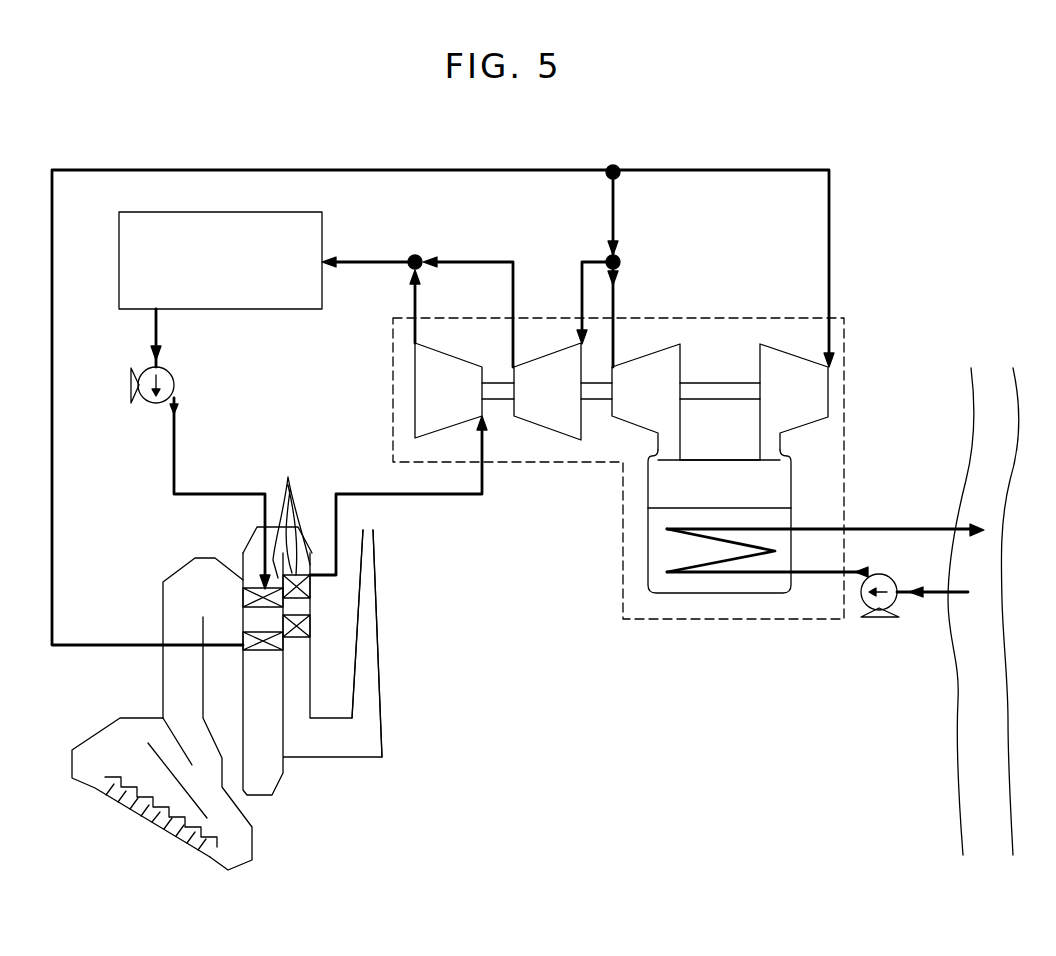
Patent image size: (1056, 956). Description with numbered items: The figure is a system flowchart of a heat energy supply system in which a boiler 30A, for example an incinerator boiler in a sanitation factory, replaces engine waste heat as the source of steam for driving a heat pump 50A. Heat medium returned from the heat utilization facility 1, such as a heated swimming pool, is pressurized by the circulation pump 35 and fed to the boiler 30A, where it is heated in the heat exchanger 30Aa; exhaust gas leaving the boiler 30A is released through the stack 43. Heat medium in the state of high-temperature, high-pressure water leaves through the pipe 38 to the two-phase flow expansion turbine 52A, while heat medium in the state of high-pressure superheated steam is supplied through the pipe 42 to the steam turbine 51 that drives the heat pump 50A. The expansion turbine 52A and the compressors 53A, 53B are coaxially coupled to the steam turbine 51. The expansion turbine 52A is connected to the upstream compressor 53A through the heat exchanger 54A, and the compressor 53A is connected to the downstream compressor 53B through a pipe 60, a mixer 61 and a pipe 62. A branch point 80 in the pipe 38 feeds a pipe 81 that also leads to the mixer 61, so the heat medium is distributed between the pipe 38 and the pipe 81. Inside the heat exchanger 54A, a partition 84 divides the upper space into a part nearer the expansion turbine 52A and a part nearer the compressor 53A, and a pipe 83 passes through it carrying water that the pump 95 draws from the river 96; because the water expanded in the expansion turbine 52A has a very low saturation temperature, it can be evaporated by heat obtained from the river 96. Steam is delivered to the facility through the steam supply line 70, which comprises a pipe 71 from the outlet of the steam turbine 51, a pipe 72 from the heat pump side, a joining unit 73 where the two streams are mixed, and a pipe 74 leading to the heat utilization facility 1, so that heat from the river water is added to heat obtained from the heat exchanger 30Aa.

The heat utilization facility 1 is at (226, 273).
The boiler 30A is at (268, 656).
The heat exchanger 30Aa is at (288, 478).
The circulation pump 35 is at (150, 407).
The pipe 38 is at (182, 170).
The pipe 42 is at (450, 500).
The stack 43 is at (378, 601).
The heat pump 50A is at (688, 433).
The steam turbine 51 is at (430, 403).
The two-phase flow expansion turbine 52A is at (816, 403).
The compressor 53A is at (668, 403).
The compressor 53B is at (568, 403).
The heat exchanger 54A is at (796, 484).
The pipe 60 is at (614, 300).
The mixer 61 is at (621, 264).
The pipe 62 is at (582, 262).
The steam supply line 70 is at (418, 271).
The pipe 71 is at (415, 296).
The pipe 72 is at (500, 262).
The joining unit 73 is at (415, 254).
The pipe 74 is at (357, 262).
The branch point 80 is at (613, 164).
The pipe 81 is at (614, 212).
The pipe 83 is at (896, 529).
The partition 84 is at (719, 494).
The pump 95 is at (887, 572).
The river 96 is at (994, 392).